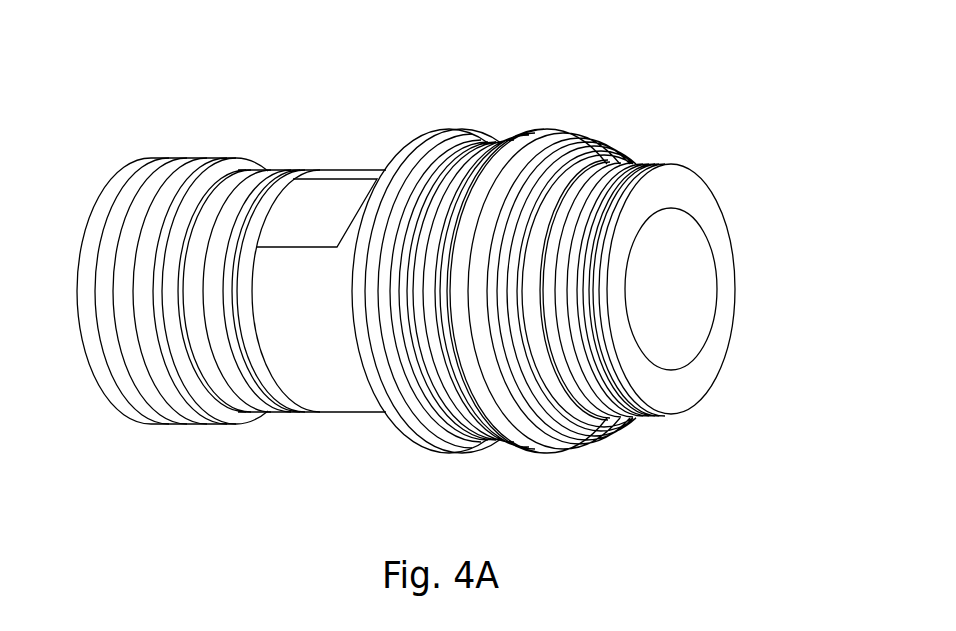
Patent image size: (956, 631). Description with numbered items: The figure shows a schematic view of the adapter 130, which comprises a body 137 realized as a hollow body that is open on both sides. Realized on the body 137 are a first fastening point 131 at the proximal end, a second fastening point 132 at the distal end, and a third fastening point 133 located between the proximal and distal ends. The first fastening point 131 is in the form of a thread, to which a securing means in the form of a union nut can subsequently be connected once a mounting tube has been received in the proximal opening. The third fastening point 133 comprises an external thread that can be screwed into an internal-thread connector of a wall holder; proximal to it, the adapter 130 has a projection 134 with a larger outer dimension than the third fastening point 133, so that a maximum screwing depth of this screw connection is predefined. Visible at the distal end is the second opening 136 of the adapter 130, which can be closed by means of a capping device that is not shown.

The adapter 130 is at (336, 478).
The first fastening point 131 is at (160, 152).
The second fastening point 132 is at (683, 163).
The third fastening point 133 is at (570, 130).
The projection 134 is at (443, 127).
The second opening 136 is at (673, 288).
The body 137 is at (300, 315).